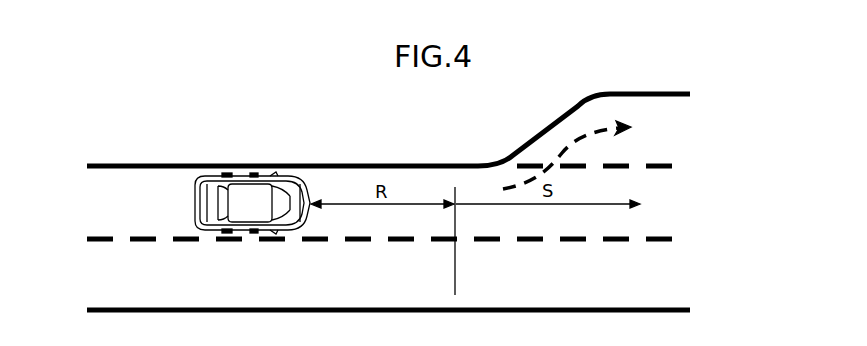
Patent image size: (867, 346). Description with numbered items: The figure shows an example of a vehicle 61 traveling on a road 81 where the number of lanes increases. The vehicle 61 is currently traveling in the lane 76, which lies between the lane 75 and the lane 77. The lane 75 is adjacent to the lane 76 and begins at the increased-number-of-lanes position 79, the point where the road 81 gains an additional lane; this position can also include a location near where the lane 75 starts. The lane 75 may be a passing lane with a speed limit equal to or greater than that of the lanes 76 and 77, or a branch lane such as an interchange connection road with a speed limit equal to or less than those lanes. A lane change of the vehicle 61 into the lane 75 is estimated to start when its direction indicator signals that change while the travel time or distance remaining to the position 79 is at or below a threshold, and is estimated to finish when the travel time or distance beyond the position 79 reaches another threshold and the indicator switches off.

The vehicle 61 is at (240, 177).
The lane 75 is at (697, 95).
The lane 76 is at (697, 166).
The lane 77 is at (416, 275).
The increased-number-of-lanes position 79 is at (456, 257).
The road 81 is at (441, 202).